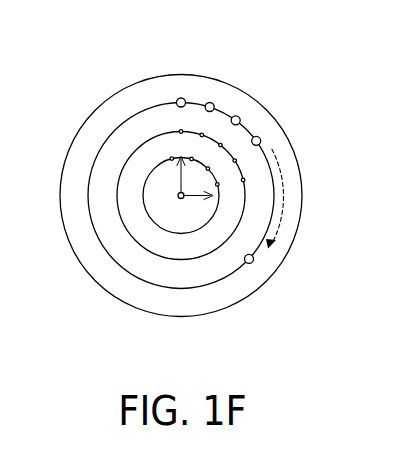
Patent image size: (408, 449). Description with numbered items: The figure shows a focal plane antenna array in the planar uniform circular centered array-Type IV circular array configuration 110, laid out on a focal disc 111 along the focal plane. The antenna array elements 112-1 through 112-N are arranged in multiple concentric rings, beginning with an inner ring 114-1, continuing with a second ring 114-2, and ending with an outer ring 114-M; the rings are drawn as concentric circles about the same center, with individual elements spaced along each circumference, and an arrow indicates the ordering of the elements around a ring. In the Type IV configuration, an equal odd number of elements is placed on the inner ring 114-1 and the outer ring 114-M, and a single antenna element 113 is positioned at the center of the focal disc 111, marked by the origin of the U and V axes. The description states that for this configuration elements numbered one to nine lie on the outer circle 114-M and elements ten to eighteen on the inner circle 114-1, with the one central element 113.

The circular array configuration 110 is at (76, 73).
The focal disc 111 is at (269, 110).
The antenna element 112-1 is at (184, 99).
The antenna element 112-N is at (253, 259).
The antenna element 113 is at (181, 199).
The inner ring 114-1 is at (166, 232).
The ring 114-2 is at (242, 180).
The outer ring 114-M is at (264, 147).